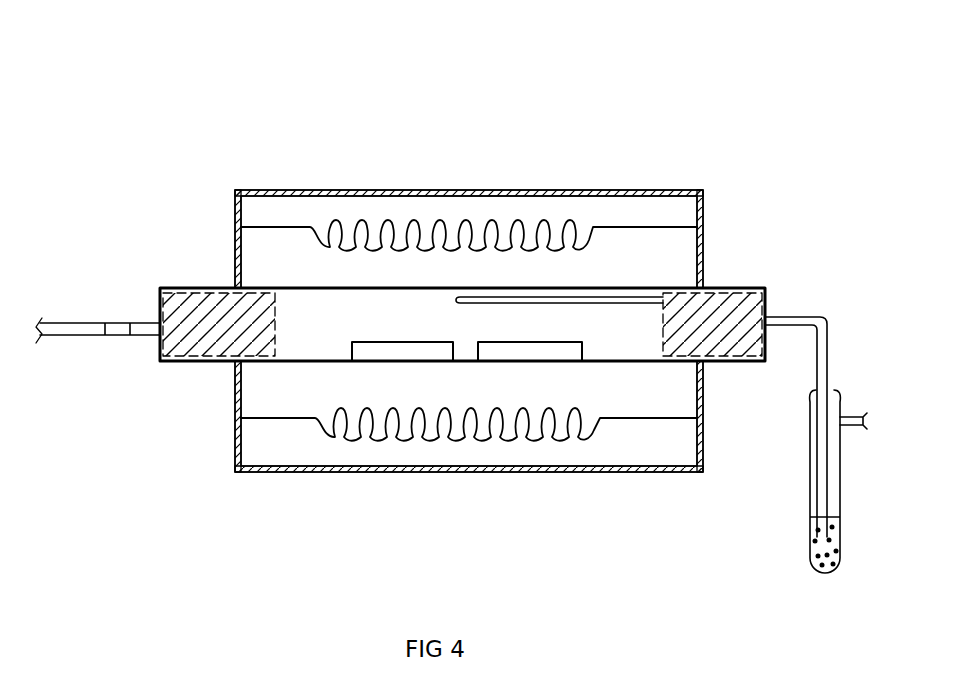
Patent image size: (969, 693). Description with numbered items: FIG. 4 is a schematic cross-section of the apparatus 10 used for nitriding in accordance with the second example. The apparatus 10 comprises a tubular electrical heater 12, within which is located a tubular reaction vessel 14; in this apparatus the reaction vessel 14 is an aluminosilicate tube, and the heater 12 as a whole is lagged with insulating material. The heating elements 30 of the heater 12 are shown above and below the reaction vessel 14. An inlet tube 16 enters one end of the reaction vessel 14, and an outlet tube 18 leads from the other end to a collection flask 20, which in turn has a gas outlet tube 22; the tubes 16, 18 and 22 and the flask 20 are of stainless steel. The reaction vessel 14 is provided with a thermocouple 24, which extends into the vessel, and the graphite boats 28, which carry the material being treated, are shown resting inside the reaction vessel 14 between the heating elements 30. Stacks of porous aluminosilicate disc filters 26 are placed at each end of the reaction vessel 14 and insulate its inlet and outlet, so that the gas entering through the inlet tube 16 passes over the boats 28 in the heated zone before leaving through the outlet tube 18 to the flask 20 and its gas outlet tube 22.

The apparatus 10 is at (562, 78).
The tubular electrical heater 12 is at (475, 170).
The reaction vessel 14 is at (372, 274).
The inlet tube 16 is at (88, 330).
The outlet tube 18 is at (805, 320).
The collection flask 20 is at (790, 511).
The gas outlet tube 22 is at (853, 421).
The thermocouple 24 is at (590, 296).
The porous aluminosilicate disc filters 26 is at (205, 316).
The graphite boats 28 is at (515, 354).
The heating elements 30 is at (501, 208).